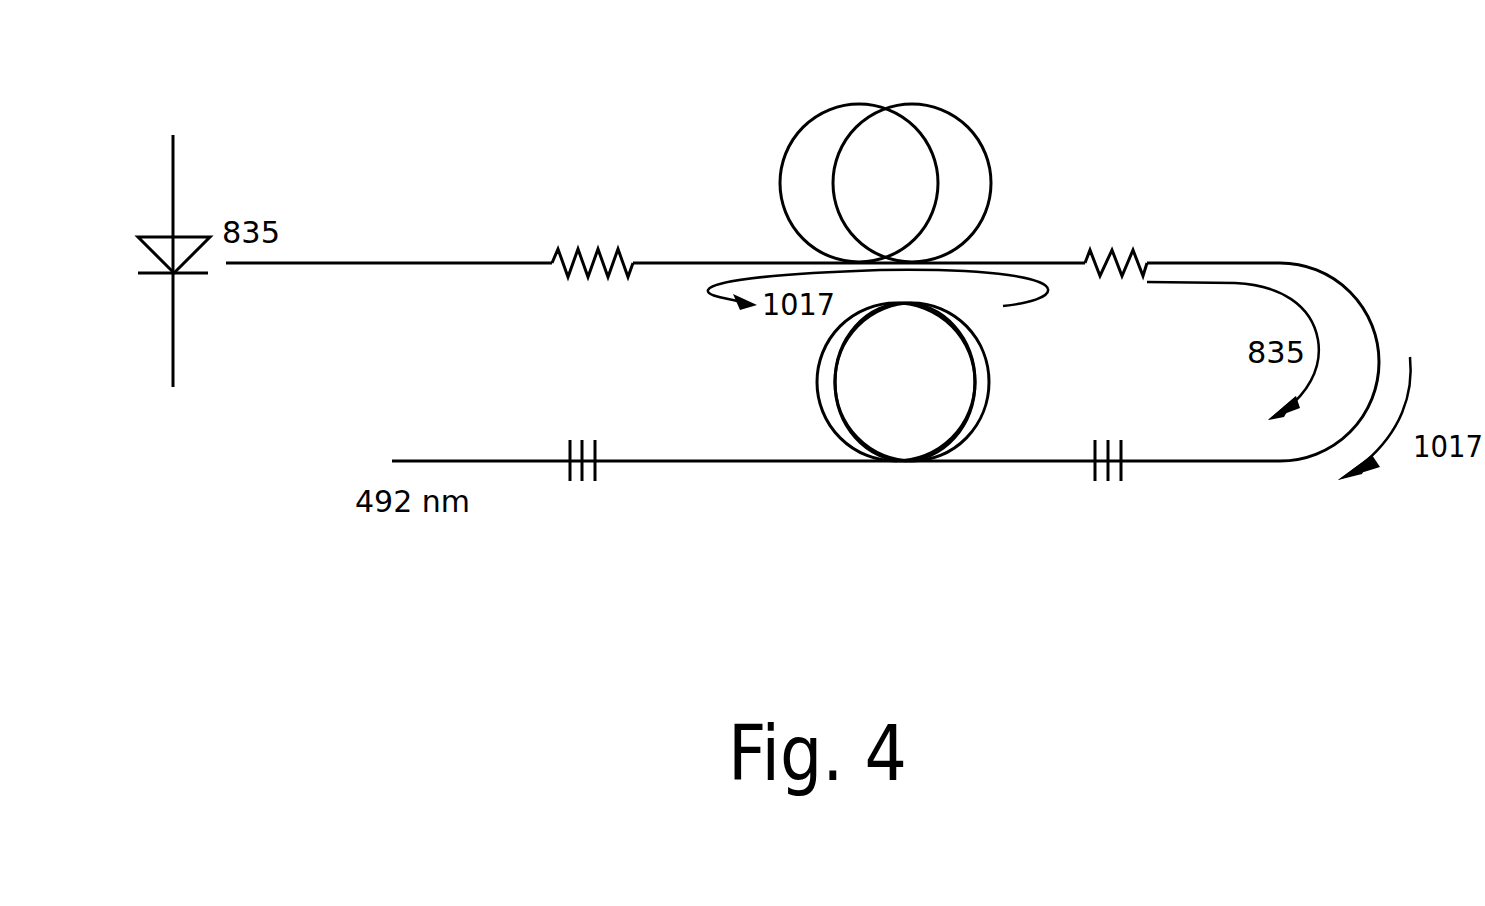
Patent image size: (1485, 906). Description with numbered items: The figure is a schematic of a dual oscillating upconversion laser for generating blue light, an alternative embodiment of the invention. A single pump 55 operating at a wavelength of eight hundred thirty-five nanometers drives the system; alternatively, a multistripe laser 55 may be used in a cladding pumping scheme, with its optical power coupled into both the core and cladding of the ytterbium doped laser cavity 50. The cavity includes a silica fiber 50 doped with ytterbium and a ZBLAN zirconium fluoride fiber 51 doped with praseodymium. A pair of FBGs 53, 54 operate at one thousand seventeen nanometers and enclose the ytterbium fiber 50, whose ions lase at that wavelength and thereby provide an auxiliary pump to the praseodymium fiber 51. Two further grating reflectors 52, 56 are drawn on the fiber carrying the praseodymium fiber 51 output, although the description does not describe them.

The ytterbium doped laser cavity 50 is at (1030, 153).
The ZBLAN zirconium fluoride fiber 51 is at (1020, 403).
The fiber grating reflector (492 nm) 52 is at (1092, 470).
The FBG 53 is at (627, 262).
The FBG 54 is at (1145, 262).
The pump 55 is at (173, 325).
The fiber grating reflector (492 nm) 56 is at (570, 480).